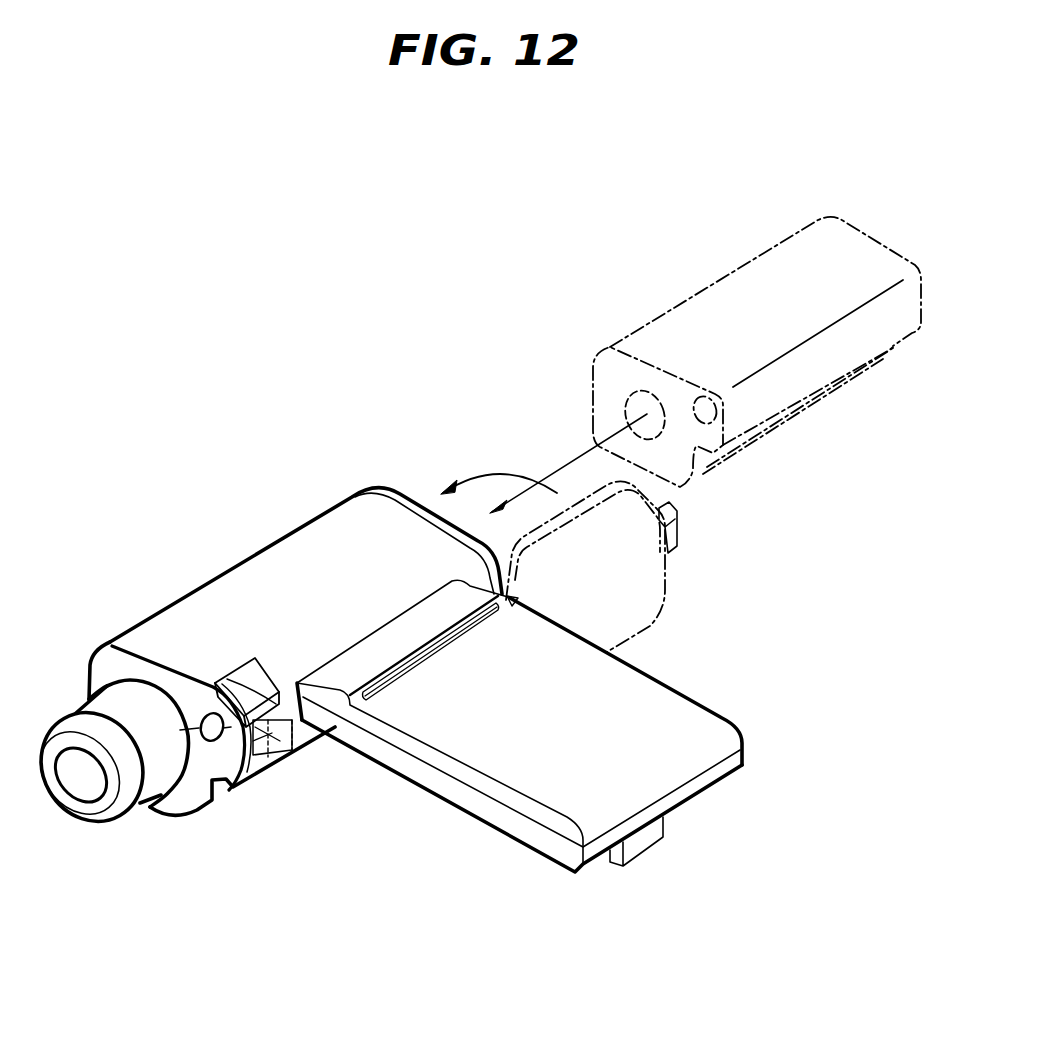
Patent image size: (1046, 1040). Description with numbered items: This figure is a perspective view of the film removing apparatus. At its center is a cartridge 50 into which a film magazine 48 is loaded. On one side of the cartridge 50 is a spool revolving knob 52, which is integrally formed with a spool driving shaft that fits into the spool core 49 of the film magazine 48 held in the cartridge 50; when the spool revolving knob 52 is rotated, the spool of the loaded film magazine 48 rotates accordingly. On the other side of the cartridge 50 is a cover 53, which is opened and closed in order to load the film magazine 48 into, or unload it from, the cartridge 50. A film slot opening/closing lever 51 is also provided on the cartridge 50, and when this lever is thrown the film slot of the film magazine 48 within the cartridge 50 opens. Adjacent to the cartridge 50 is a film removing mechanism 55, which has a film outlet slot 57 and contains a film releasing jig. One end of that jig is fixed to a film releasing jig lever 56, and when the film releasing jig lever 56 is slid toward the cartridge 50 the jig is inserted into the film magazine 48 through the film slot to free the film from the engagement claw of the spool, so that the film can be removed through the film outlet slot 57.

The film magazine 48 is at (733, 287).
The spool core 49 is at (634, 402).
The cartridge 50 is at (243, 558).
The film slot opening/closing lever 51 is at (258, 672).
The spool revolving knob 52 is at (112, 826).
The cover 53 is at (643, 602).
The film removing mechanism 55 is at (745, 757).
The film releasing jig lever 56 is at (646, 851).
The film outlet slot 57 is at (423, 658).